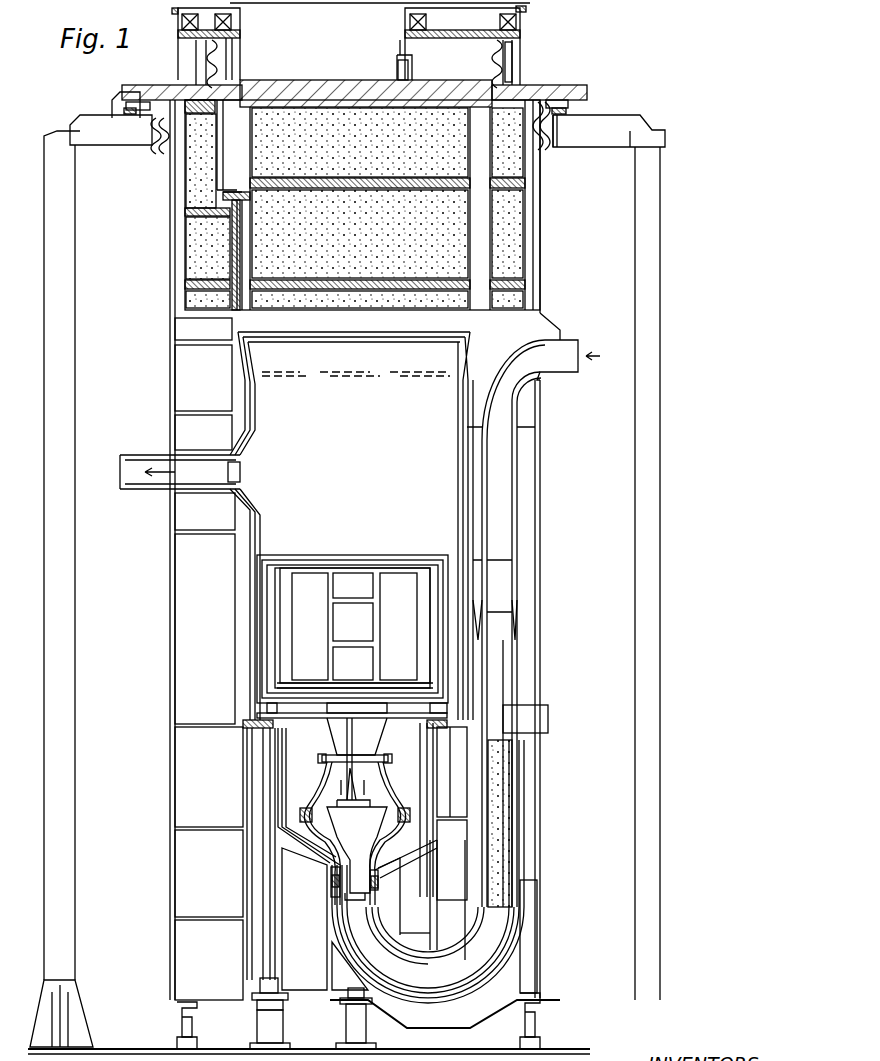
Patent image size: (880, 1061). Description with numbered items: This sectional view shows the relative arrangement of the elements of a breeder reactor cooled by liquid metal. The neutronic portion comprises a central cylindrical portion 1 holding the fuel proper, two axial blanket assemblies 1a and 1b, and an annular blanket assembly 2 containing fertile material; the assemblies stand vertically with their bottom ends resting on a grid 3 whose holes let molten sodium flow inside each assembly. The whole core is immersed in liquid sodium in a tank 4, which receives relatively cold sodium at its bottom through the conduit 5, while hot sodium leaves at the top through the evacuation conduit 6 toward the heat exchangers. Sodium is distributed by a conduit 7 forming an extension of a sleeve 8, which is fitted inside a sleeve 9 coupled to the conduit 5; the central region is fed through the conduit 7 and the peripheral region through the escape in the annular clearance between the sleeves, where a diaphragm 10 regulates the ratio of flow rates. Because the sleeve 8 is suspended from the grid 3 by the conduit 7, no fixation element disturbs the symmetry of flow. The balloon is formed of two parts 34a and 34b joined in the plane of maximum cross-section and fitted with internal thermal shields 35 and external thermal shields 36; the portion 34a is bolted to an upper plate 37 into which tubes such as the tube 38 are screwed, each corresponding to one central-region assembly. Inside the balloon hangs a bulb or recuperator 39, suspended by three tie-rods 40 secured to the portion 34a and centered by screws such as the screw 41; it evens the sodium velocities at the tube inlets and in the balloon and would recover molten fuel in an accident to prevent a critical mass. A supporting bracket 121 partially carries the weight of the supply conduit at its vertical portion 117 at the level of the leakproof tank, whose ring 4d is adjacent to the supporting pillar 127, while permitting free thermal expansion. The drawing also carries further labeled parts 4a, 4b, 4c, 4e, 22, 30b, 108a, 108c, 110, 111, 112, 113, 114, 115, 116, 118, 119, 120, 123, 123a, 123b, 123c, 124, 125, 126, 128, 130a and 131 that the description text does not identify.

The central cylindrical portion 1 is at (353, 607).
The axial blanket assembly 1a is at (358, 580).
The axial blanket assembly 1b is at (353, 663).
The annular blanket assembly 2 is at (354, 626).
The grid 3 is at (410, 718).
The tank 4 is at (462, 512).
The inner vessel wall 4a is at (475, 488).
The insulation layer 4b is at (478, 262).
The upper insulation layer 4c is at (505, 183).
The ring of the leakproof tank 4d is at (443, 810).
The lower vessel wall section 4e is at (449, 772).
The conduit 5 is at (330, 910).
The evacuation conduit 6 is at (120, 472).
The conduit 7 is at (332, 738).
The sleeve 8 is at (325, 858).
The sleeve 9 is at (331, 889).
The diaphragm 10 is at (362, 900).
The thermal shield 22 is at (500, 210).
The lower duct wall 30b is at (425, 848).
The balloon portion 34a is at (317, 833).
The balloon portion 34b is at (395, 855).
The internal thermal shields 35 is at (300, 826).
The external thermal shields 36 is at (322, 790).
The upper plate 37 is at (353, 750).
The tube 38 is at (330, 745).
The bulb or recuperator 39 is at (357, 830).
The tie-rods 40 is at (380, 780).
The screw 41 is at (392, 797).
The inner shell 108a is at (470, 462).
The lower shell 108c is at (449, 810).
The vessel section 110 is at (236, 497).
The insulation plate 111 is at (440, 296).
The support column 112 is at (72, 318).
The drive housing 113 is at (514, 65).
The seal ring 114 is at (378, 890).
The duct lining 115 is at (400, 945).
The duct 116 is at (462, 945).
The vertical portion of the supply conduit 117 is at (498, 750).
The outlet pipe 118 is at (545, 378).
The U-bend 119 is at (522, 938).
The support ring 120 is at (380, 878).
The supporting bracket 121 is at (545, 723).
The outer pipe 123 is at (540, 650).
The outer pipe lower section 123a is at (542, 845).
The compartment 123b is at (207, 995).
The compartment 123c is at (308, 990).
The bellows 124 is at (558, 126).
The support foot 125 is at (192, 1025).
The pedestal 126 is at (366, 1026).
The supporting pillar 127 is at (262, 775).
The pedestal 128 is at (284, 1026).
The baffle 130a is at (465, 592).
The shield compartments 131 is at (188, 430).